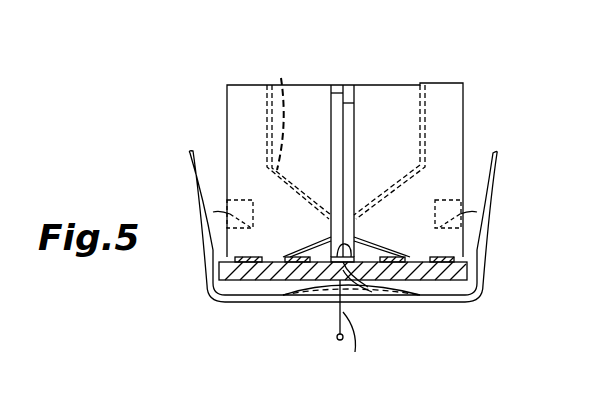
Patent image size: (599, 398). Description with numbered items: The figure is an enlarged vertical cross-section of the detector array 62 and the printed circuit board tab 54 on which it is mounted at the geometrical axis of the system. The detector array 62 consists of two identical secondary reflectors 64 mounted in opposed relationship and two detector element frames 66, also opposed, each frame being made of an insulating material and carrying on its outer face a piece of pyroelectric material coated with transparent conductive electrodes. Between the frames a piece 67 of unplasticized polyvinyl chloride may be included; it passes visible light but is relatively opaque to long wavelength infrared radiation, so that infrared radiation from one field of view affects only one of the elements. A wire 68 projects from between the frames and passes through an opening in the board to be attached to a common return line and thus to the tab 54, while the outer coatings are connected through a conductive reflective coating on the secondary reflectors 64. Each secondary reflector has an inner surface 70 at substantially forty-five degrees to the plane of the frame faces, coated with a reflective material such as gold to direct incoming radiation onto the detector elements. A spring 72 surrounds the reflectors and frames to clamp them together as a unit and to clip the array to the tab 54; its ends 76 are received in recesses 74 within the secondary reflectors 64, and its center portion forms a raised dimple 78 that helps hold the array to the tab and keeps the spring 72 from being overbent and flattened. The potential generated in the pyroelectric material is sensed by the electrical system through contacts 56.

The tab portion 54 is at (248, 282).
The contacts 56 is at (358, 326).
The detector array 62 is at (463, 124).
The secondary reflectors 64 is at (448, 113).
The detector element frames 66 is at (337, 85).
The piece of material 67 is at (346, 85).
The wire 68 is at (360, 278).
The inner surface 70 is at (278, 110).
The spring 72 is at (205, 290).
The recesses 74 is at (472, 196).
The ends of the spring 76 is at (223, 210).
The raised dimple 78 is at (330, 292).